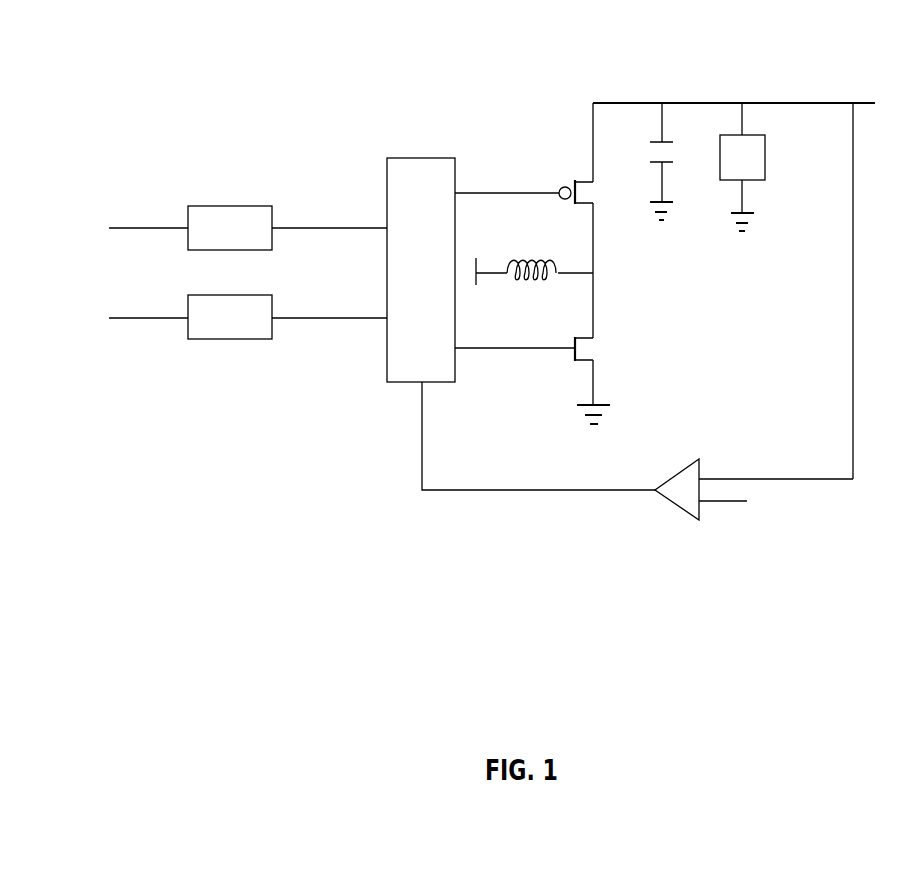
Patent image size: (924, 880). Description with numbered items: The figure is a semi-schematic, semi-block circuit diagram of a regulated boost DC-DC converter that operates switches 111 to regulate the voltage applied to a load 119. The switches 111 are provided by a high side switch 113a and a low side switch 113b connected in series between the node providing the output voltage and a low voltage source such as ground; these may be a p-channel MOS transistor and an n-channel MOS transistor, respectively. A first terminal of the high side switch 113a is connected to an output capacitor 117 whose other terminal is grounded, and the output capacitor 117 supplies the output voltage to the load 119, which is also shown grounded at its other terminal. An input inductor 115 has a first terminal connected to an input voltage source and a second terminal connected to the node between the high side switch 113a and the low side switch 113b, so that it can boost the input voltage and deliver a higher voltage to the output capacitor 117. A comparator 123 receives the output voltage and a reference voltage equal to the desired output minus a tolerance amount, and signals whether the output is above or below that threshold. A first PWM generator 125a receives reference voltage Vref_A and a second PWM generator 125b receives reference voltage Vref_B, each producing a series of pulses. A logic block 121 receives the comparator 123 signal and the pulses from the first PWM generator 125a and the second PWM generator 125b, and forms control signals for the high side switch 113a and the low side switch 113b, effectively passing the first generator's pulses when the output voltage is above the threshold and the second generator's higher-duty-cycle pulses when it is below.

The switches 111 is at (595, 80).
The high side switch 113a is at (572, 177).
The low side switch 113b is at (567, 367).
The input inductor 115 is at (532, 262).
The output capacitor 117 is at (668, 160).
The load 119 is at (765, 160).
The logic block 121 is at (395, 381).
The comparator 123 is at (673, 505).
The first PWM generator 125a is at (230, 204).
The second PWM generator 125b is at (227, 342).